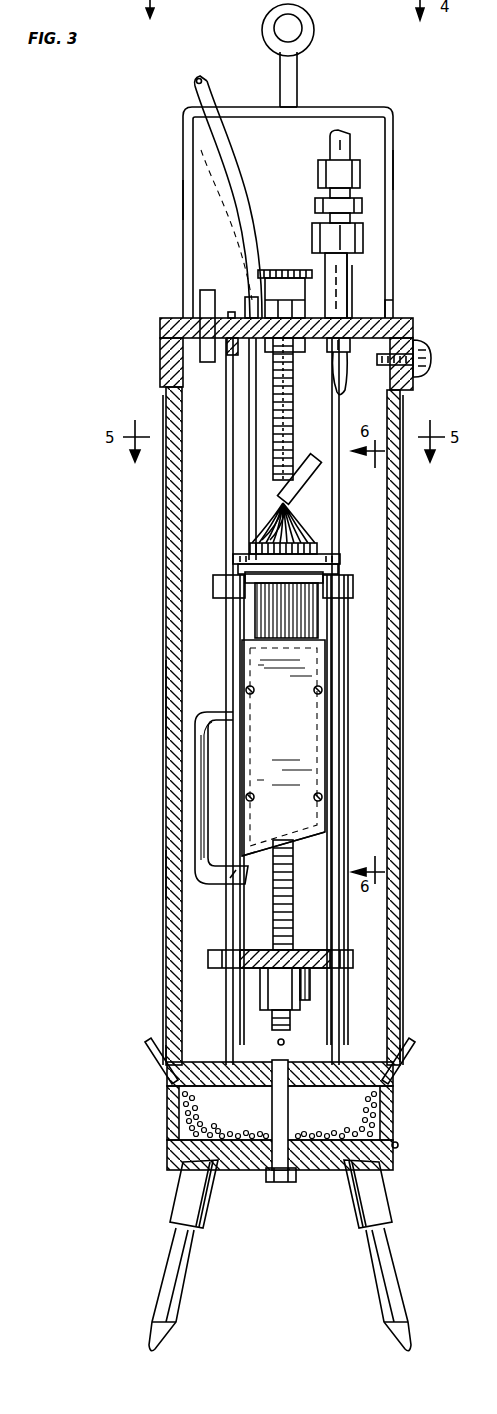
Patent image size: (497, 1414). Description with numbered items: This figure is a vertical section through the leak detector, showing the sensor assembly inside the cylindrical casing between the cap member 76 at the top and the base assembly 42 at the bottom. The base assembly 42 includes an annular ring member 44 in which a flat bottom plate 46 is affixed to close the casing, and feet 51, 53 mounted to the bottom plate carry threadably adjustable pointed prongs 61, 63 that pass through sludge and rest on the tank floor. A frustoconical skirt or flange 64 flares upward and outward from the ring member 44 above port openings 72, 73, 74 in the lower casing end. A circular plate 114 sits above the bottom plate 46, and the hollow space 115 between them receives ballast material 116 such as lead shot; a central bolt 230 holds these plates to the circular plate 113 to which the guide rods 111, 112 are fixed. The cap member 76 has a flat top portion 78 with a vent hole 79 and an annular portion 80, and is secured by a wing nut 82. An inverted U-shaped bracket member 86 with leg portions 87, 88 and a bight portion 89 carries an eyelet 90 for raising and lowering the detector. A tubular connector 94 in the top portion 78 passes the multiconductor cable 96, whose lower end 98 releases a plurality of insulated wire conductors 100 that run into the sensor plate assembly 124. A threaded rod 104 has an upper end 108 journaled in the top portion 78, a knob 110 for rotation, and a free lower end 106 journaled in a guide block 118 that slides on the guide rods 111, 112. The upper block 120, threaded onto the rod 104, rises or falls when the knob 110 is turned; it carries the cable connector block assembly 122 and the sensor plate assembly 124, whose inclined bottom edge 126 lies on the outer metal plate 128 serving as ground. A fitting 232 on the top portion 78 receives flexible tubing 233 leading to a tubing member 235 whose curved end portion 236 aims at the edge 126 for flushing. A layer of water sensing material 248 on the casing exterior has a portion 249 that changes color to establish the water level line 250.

The base assembly 42 is at (400, 1143).
The annular ring member 44 is at (396, 1112).
The bottom plate 46 is at (312, 1168).
The foot 51 is at (178, 1210).
The foot 53 is at (385, 1210).
The pointed prong 61 is at (178, 1290).
The pointed prong 63 is at (392, 1298).
The skirt or flange 64 is at (150, 1048).
The port opening 72 is at (168, 1035).
The port opening 73 is at (284, 1040).
The port opening 74 is at (396, 1022).
The cap member 76 is at (410, 325).
The top portion 78 is at (393, 300).
The vent hole 79 is at (355, 340).
The annular portion 80 is at (163, 350).
The wing nut 82 is at (433, 368).
The bracket member 86 is at (394, 108).
The leg portion 87 is at (183, 192).
The leg portion 88 is at (393, 172).
The bight portion 89 is at (310, 107).
The eyelet 90 is at (314, 30).
The tubular connector 94 is at (352, 282).
The multiconductor cable 96 is at (350, 144).
The lower end of cable 98 is at (292, 503).
The insulated wire conductors 100 is at (312, 510).
The threaded rod 104 is at (275, 408).
The free lower end 106 is at (268, 1020).
The upper end 108 is at (252, 272).
The knob 110 is at (283, 270).
The guide rod 111 is at (232, 648).
The guide rod 112 is at (336, 665).
The circular plate 113 is at (262, 1063).
The circular plate 114 is at (365, 1098).
The hollow space 115 is at (250, 1122).
The ballast material 116 is at (182, 1120).
The guide block 118 is at (350, 958).
The upper block 120 is at (350, 588).
The cable connector block assembly 122 is at (335, 550).
The sensor plate assembly 124 is at (326, 716).
The bottom edge 126 is at (320, 840).
The outer metal plate 128 is at (300, 732).
The bolt 230 is at (268, 1152).
The fitting 232 is at (246, 300).
The tubing 233 is at (205, 120).
The tubing member 235 is at (200, 768).
The curved end portion 236 is at (222, 878).
The layer of water sensing material 248 is at (166, 695).
The portion of the layer 249 is at (166, 870).
The water level line 250 is at (158, 833).